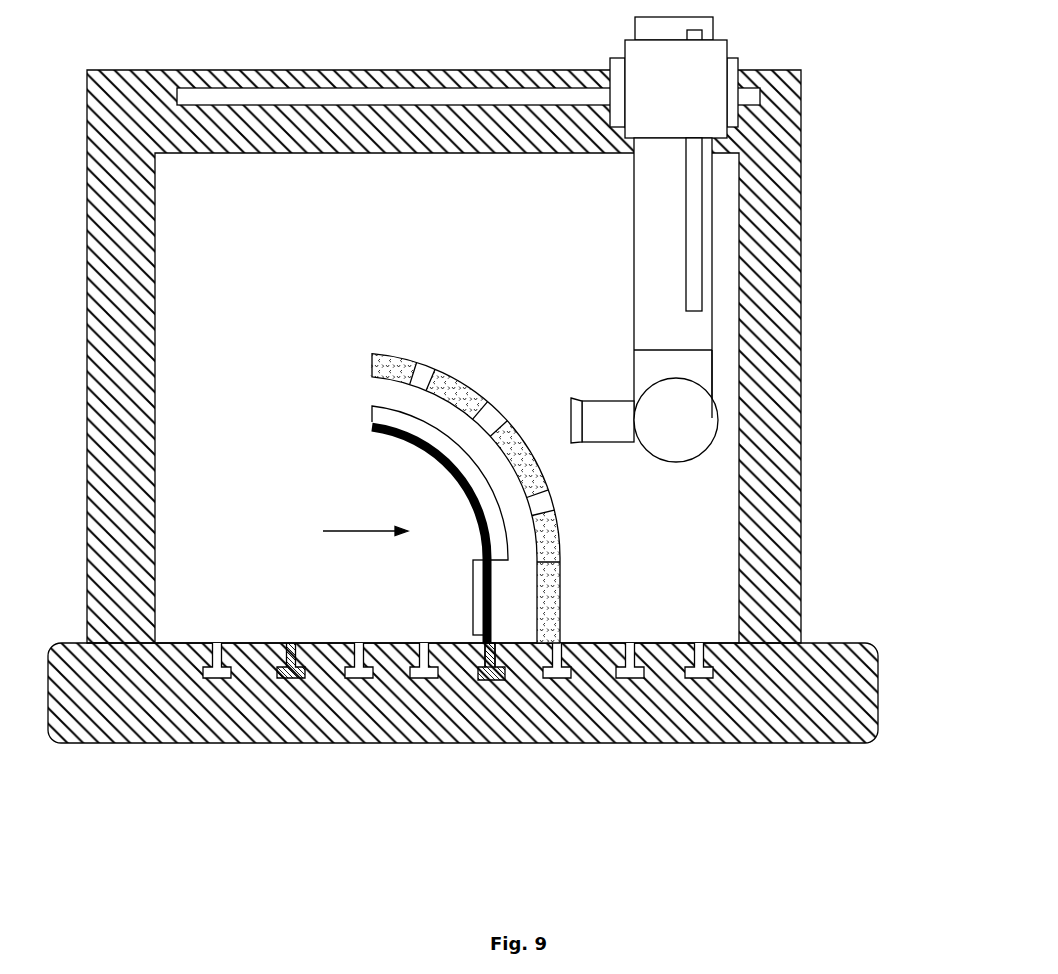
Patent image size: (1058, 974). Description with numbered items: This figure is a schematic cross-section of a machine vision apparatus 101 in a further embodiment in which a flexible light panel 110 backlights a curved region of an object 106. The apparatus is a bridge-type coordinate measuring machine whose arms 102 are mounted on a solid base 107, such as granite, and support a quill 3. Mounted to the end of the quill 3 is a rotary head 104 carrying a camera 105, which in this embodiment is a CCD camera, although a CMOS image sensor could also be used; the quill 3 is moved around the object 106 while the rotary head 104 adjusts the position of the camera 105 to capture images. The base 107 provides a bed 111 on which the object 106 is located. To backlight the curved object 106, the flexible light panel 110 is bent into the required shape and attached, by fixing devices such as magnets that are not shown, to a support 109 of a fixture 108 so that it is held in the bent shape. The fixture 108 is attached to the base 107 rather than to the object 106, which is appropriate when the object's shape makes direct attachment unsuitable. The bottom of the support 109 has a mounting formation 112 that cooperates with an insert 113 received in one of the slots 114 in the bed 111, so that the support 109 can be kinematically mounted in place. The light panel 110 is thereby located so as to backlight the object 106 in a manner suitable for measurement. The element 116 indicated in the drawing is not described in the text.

The machine vision apparatus 101 is at (501, 449).
The arms 102 is at (806, 158).
The quill 3 is at (722, 235).
The rotary head 104 is at (723, 428).
The camera 105 is at (590, 450).
The object 106 is at (573, 546).
The base 107 is at (750, 746).
The fixture 108 is at (333, 531).
The support 109 is at (426, 431).
The flexible light panel 110 is at (468, 439).
The bed 111 is at (670, 640).
The mounting formation 112 is at (481, 657).
The insert 113 is at (494, 692).
The slots 114 is at (423, 690).
The strip end 116 is at (485, 615).